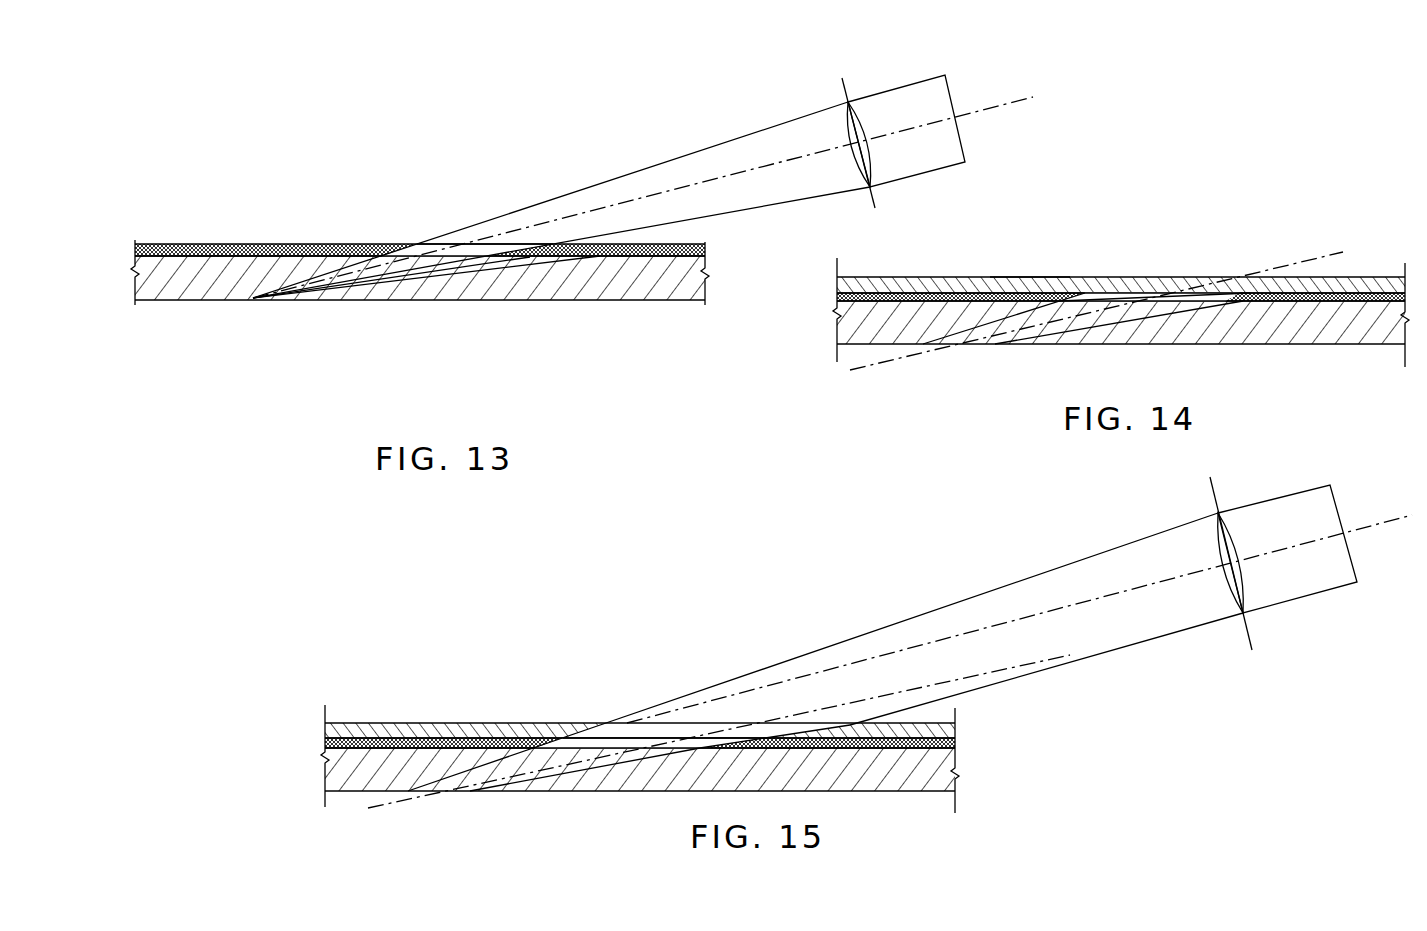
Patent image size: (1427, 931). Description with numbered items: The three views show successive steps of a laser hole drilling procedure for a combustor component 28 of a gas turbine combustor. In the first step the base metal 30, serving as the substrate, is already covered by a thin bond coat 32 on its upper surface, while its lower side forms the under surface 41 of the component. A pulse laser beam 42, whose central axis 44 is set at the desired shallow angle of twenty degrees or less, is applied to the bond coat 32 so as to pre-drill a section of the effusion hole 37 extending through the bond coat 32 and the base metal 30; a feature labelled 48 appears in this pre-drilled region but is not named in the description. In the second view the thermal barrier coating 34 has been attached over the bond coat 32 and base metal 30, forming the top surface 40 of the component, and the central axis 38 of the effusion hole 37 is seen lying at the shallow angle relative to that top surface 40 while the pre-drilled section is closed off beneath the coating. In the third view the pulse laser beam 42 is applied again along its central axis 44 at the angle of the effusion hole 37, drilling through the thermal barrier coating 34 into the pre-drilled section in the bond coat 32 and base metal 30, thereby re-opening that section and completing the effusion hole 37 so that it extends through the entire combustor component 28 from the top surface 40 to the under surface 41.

In FIG. 13, the combustor component 28 is at (598, 320).
In FIG. 13, the base metal 30 is at (706, 286).
In FIG. 14, the base metal 30 is at (836, 338).
In FIG. 15, the base metal 30 is at (958, 780).
In FIG. 13, the bond coat 32 is at (708, 250).
In FIG. 14, the bond coat 32 is at (836, 296).
In FIG. 15, the bond coat 32 is at (958, 745).
In FIG. 14, the thermal barrier coating 34 is at (838, 266).
In FIG. 15, the thermal barrier coating 34 is at (958, 728).
In FIG. 13, the effusion hole 37 is at (262, 300).
In FIG. 14, the effusion hole 37 is at (1020, 340).
In FIG. 15, the effusion hole 37 is at (530, 774).
In FIG. 14, the central axis 38 is at (897, 364).
In FIG. 15, the central axis 38 is at (387, 808).
In FIG. 14, the top surface 40 is at (1018, 277).
In FIG. 15, the top surface 40 is at (516, 723).
In FIG. 13, the under surface 41 is at (524, 300).
In FIG. 14, the under surface 41 is at (1288, 346).
In FIG. 15, the under surface 41 is at (602, 793).
In FIG. 13, the pulse laser beam 42 is at (676, 158).
In FIG. 15, the pulse laser beam 42 is at (973, 598).
In FIG. 13, the central axis of the pulse laser beam 44 is at (1010, 103).
In FIG. 15, the central axis of the pulse laser beam 44 is at (1138, 588).
In FIG. 13, the coupling region 48 is at (322, 270).
In FIG. 14, the coupling region 48 is at (984, 322).
In FIG. 15, the coupling region 48 is at (470, 765).